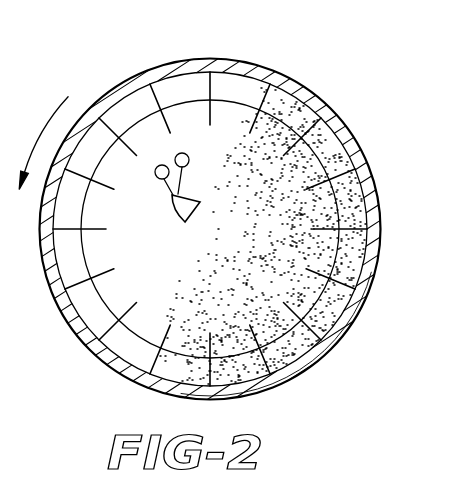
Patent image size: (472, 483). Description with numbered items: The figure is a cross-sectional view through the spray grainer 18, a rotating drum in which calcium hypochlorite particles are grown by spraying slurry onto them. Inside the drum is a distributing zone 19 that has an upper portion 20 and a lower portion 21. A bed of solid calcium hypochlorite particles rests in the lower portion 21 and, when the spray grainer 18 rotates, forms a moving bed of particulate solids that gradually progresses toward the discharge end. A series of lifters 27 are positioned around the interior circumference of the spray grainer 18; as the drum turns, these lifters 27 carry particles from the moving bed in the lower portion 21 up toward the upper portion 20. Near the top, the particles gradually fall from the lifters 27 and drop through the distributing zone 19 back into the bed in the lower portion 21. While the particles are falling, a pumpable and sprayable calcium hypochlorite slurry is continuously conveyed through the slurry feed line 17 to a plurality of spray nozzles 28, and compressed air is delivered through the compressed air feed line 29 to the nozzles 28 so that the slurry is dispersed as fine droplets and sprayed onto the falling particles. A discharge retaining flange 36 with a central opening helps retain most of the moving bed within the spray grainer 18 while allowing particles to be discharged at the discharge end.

The slurry feed line 17 is at (160, 184).
The spray grainer 18 is at (253, 60).
The distributing zone 19 is at (45, 281).
The upper portion 20 is at (195, 127).
The lower portion 21 is at (322, 264).
The lifters 27 is at (164, 72).
The spray nozzles 28 is at (183, 222).
The compressed air feed line 29 is at (188, 154).
The discharge retaining flange 36 is at (281, 105).